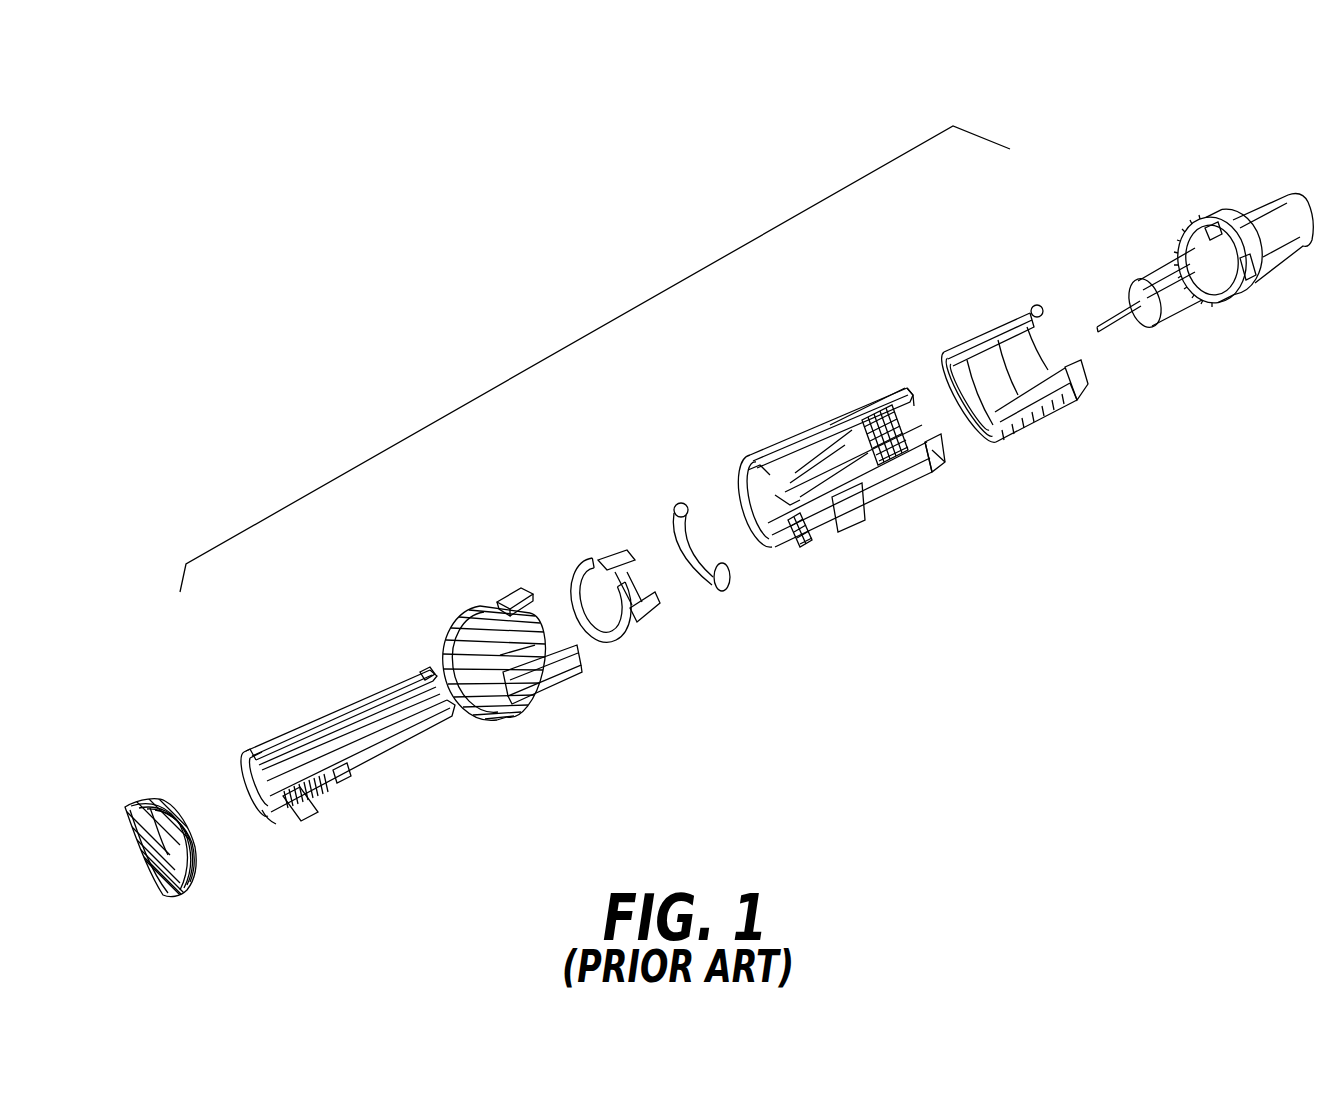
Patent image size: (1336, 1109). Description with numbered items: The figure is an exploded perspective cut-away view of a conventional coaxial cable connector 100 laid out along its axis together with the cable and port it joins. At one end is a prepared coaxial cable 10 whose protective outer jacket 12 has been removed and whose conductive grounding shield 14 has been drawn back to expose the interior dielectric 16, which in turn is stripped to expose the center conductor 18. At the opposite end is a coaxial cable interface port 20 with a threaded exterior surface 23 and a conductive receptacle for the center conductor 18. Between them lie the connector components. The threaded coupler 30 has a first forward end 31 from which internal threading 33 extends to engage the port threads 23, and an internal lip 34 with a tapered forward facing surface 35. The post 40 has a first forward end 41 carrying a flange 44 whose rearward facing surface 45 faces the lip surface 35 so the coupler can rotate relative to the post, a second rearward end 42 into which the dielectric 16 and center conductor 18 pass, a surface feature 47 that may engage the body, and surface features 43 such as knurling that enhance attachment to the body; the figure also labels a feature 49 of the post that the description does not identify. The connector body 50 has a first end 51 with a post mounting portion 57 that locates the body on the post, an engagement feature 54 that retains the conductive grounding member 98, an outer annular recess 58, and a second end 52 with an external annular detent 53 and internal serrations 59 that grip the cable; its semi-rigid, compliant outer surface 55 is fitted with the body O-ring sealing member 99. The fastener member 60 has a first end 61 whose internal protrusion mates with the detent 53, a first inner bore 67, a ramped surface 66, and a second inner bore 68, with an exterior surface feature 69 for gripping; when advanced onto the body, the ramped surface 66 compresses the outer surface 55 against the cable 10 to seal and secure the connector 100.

The coaxial cable 10 is at (1198, 198).
The protective outer jacket 12 is at (1275, 196).
The conductive grounding shield 14 is at (1226, 222).
The interior dielectric 16 is at (1158, 265).
The center conductor 18 is at (1112, 300).
The coaxial cable interface port 20 is at (125, 778).
The threaded exterior surface 23 is at (145, 803).
The threaded coupler 30 is at (525, 705).
The first forward end 31 is at (491, 640).
The internal threading 33 is at (490, 698).
The internal lip 34 is at (516, 622).
The forward facing surface 35 is at (500, 602).
The post 40 is at (362, 770).
The first forward end 41 is at (305, 745).
The second rearward end 42 is at (415, 656).
The surface features 43 is at (305, 820).
The flange 44 is at (250, 752).
The rearward facing surface 45 is at (260, 757).
The surface feature 47 is at (307, 736).
The end notch 49 is at (275, 825).
The connector body 50 is at (850, 505).
The first end 51 is at (806, 470).
The second end 52 is at (887, 382).
The external annular detent 53 is at (857, 400).
The engagement feature 54 is at (790, 500).
The outer surface 55 is at (925, 470).
The post mounting portion 57 is at (755, 470).
The outer annular recess 58 is at (770, 522).
The internal surface features 59 is at (880, 420).
The fastener member 60 is at (1033, 405).
The first end 61 is at (1019, 350).
The ramped surface 66 is at (998, 340).
The first opening or inner bore 67 is at (967, 360).
The second opening or inner bore 68 is at (1030, 327).
The exterior surface feature 69 is at (1075, 402).
The grounding member 98 is at (632, 622).
The connector body sealing member 99 is at (714, 592).
The coaxial cable connector 100 is at (575, 341).